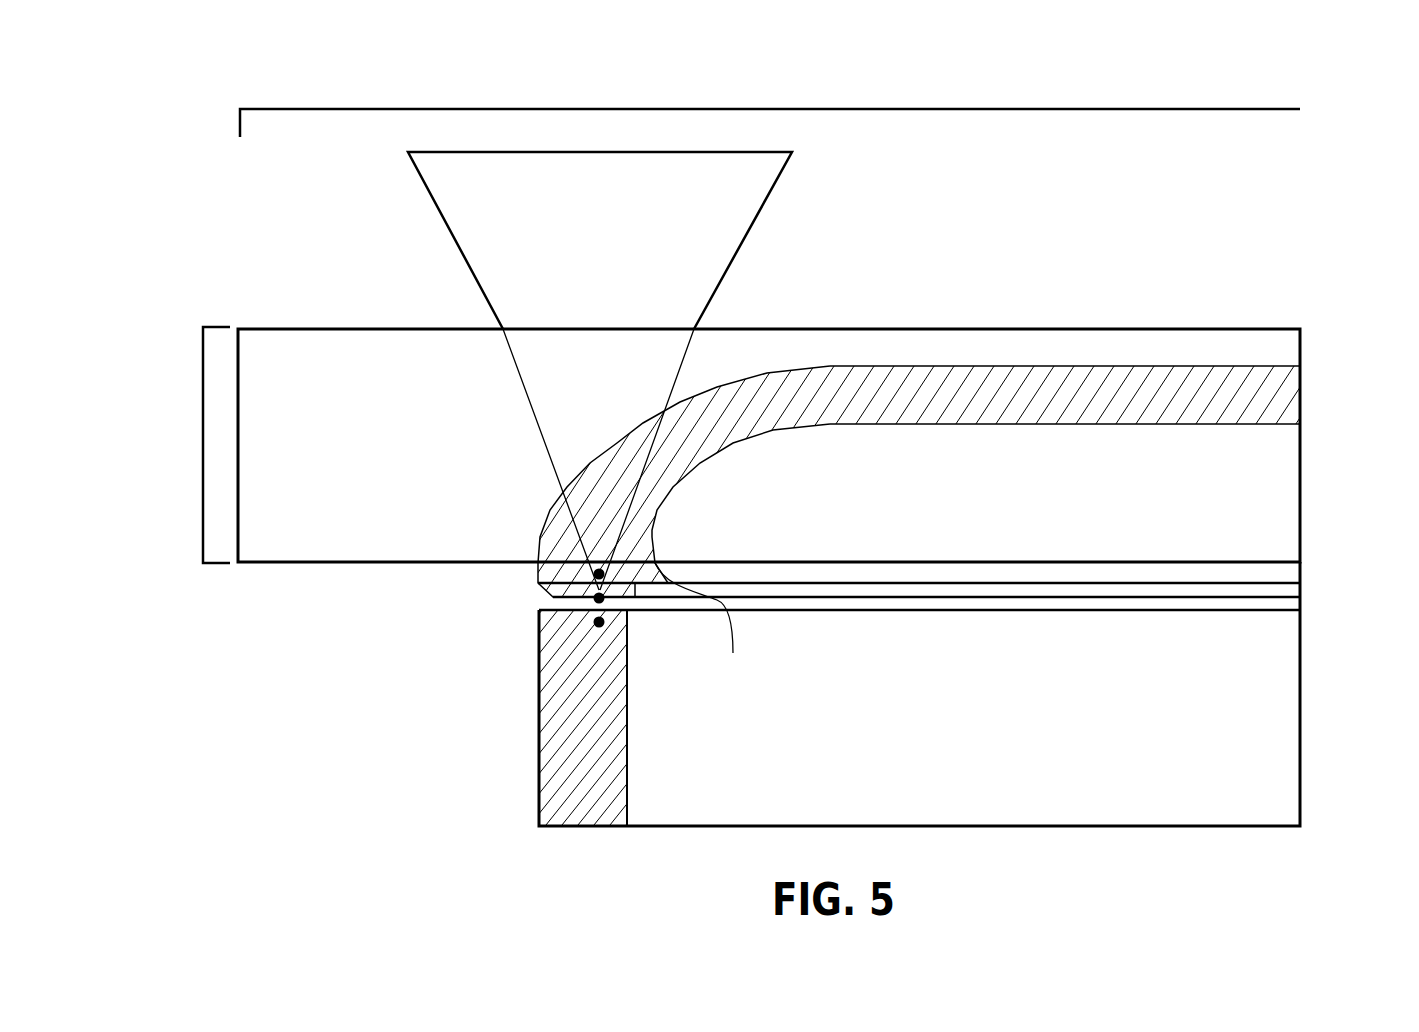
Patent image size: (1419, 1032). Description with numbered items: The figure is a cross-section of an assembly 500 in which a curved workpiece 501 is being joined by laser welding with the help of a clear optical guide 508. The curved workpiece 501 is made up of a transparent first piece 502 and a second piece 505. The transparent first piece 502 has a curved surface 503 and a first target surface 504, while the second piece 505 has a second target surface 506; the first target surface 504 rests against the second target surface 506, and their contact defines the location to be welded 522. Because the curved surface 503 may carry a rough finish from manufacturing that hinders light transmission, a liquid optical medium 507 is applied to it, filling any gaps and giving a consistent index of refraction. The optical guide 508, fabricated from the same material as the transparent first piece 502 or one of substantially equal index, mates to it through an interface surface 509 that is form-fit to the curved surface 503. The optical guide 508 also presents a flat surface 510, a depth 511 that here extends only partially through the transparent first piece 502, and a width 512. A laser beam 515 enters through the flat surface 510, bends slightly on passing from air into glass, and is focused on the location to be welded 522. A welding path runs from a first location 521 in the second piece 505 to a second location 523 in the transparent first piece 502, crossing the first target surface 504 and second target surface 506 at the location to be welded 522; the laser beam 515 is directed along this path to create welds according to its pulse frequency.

The assembly 500 is at (1313, 63).
The curved workpiece 501 is at (627, 734).
The transparent first piece 502 is at (1035, 366).
The curved surface 503 is at (540, 503).
The first target surface 504 is at (1258, 594).
The second piece 505 is at (577, 810).
The second target surface 506 is at (1287, 602).
The liquid optical medium 507 is at (536, 560).
The optical guide 508 is at (277, 365).
The interface surface 509 is at (541, 540).
The flat surface 510 is at (1214, 326).
The depth 511 is at (202, 427).
The width 512 is at (1041, 108).
The laser beam 515 is at (765, 203).
The first location 521 is at (594, 623).
The location to be welded 522 is at (593, 598).
The second location 523 is at (593, 573).